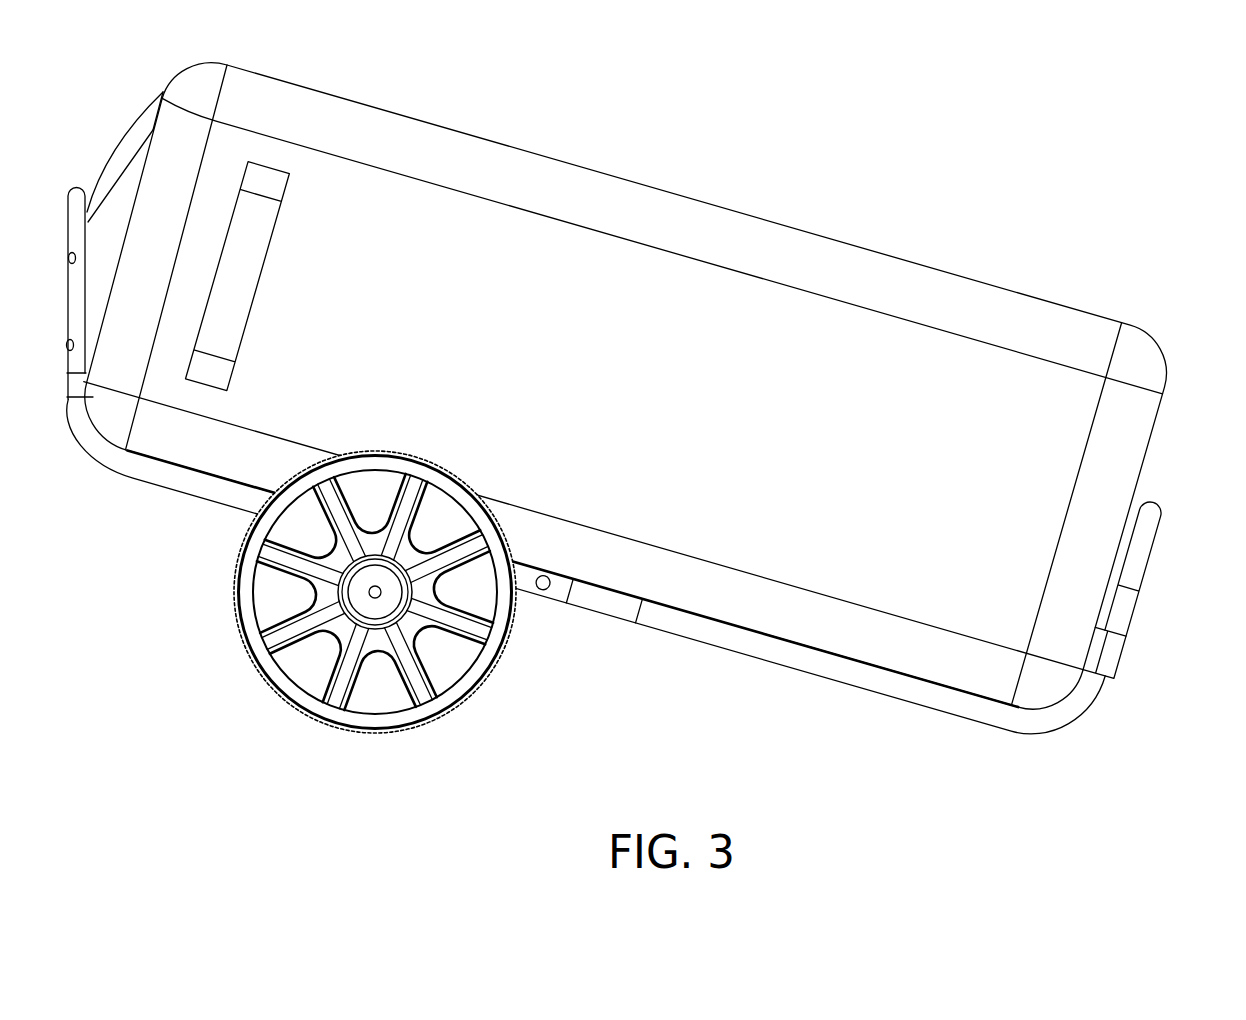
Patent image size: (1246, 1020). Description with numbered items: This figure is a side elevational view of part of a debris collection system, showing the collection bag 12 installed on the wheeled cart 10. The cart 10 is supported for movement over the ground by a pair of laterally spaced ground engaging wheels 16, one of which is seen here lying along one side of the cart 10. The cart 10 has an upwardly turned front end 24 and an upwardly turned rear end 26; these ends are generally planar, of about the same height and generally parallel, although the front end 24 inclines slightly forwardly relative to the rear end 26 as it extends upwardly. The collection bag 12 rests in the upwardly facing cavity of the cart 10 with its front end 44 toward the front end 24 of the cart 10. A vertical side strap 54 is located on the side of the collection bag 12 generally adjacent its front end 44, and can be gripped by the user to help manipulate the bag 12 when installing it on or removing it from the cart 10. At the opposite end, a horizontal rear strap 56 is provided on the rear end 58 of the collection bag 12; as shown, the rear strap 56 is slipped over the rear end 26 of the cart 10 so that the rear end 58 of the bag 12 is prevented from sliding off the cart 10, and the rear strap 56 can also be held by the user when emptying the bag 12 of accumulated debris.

The wheeled cart 10 is at (586, 632).
The collection bag 12 is at (645, 401).
The ground engaging wheel 16 is at (236, 577).
The front end 24 is at (55, 184).
The rear end 26 is at (1146, 546).
The front end 44 is at (110, 160).
The side strap 54 is at (240, 288).
The rear strap 56 is at (1128, 656).
The rear end 58 is at (1160, 428).